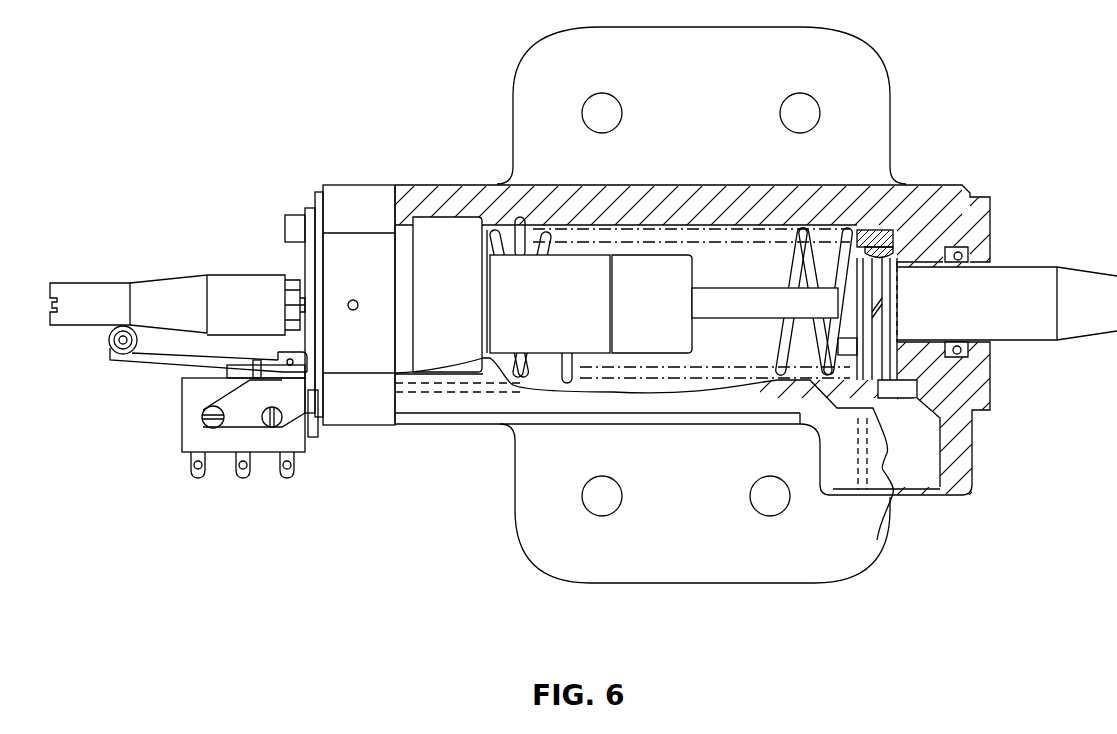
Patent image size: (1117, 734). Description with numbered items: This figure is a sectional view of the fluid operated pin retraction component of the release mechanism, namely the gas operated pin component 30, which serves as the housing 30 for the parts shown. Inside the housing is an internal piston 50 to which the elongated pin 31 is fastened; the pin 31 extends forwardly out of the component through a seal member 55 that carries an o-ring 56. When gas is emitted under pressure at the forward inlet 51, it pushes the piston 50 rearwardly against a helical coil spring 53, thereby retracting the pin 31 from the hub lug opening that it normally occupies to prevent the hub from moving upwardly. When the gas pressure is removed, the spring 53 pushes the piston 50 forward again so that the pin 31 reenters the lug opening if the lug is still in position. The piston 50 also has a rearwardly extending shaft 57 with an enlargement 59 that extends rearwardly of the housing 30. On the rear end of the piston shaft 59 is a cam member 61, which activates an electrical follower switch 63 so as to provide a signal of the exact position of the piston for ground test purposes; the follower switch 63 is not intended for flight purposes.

The gas operated pin component 30 is at (930, 202).
The elongated pin 31 is at (1104, 317).
The internal piston 50 is at (880, 290).
The forward inlet 51 is at (910, 482).
The helical coil spring 53 is at (780, 356).
The seal member 55 is at (953, 252).
The o-ring 56 is at (960, 343).
The rearwardly extending shaft 57 is at (813, 305).
The enlargement 59 is at (748, 318).
The cam member 61 is at (258, 320).
The electrical follower switch 63 is at (200, 432).